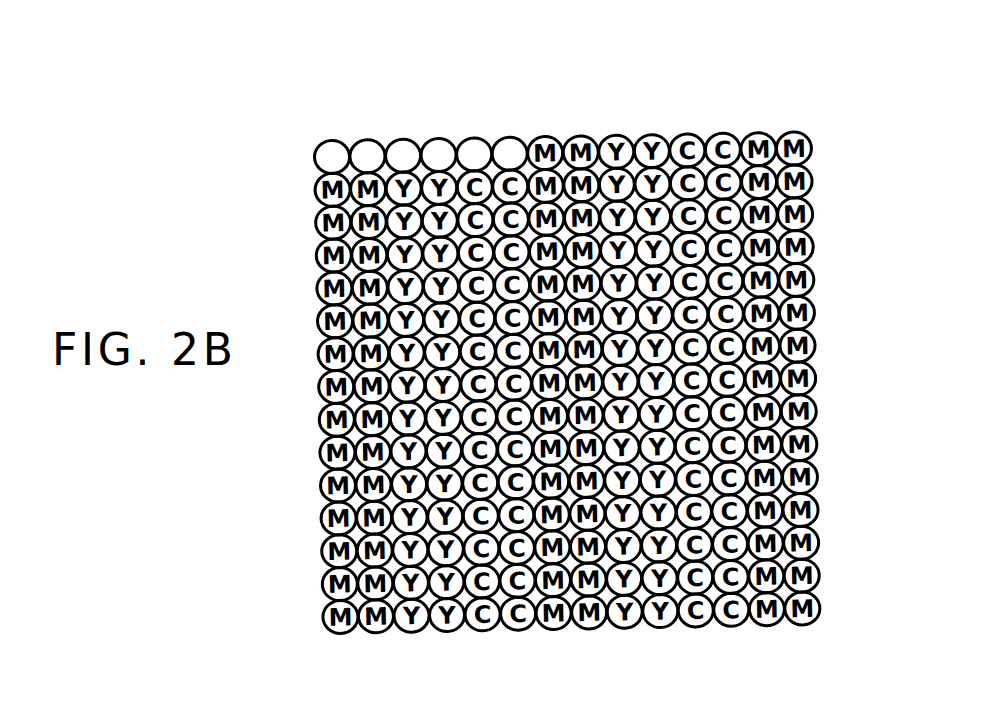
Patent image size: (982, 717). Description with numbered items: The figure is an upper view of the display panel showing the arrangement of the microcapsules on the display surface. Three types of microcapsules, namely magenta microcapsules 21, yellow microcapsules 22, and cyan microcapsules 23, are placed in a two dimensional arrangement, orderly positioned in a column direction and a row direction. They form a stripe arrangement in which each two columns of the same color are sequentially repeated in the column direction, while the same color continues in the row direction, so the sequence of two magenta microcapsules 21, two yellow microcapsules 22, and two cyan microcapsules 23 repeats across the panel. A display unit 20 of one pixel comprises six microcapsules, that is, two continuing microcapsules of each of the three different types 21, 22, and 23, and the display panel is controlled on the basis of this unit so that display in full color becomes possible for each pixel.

The display unit 20 is at (504, 66).
The magenta microcapsule 21 is at (368, 140).
The yellow microcapsule 22 is at (437, 140).
The cyan microcapsule 23 is at (509, 140).